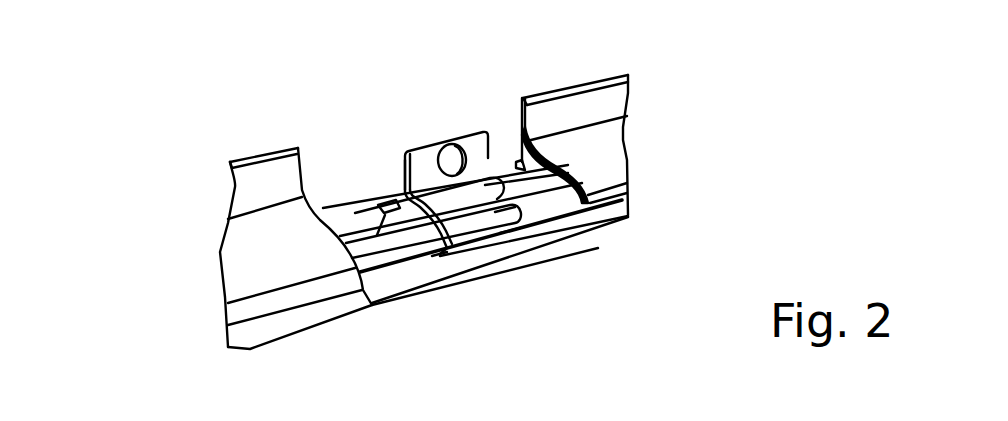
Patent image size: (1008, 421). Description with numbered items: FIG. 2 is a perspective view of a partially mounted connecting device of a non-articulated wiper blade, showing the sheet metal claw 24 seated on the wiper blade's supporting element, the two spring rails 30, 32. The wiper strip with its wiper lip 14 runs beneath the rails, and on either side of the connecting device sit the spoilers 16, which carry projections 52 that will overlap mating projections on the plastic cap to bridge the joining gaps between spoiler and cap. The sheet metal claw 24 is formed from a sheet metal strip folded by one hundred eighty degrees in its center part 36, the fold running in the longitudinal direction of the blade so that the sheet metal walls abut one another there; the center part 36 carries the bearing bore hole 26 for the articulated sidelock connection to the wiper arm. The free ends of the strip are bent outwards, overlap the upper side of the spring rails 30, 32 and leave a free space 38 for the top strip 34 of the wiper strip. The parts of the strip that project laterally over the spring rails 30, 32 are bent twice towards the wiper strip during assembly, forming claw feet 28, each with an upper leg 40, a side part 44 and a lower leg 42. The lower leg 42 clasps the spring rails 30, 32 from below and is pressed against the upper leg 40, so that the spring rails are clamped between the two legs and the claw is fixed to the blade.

The wiper lip 14 is at (617, 212).
The spoiler 16 is at (617, 108).
The spring rail 32 is at (337, 230).
The spring rail 30 is at (408, 243).
The top strip 34 is at (383, 226).
The lower leg 42 is at (442, 250).
The claw foot 28 is at (502, 245).
The side part 44 is at (510, 228).
The upper leg 40 is at (502, 208).
The sheet metal claw 24 is at (465, 118).
The bearing bore hole 26 is at (440, 157).
The center part 36 is at (423, 162).
The free space 38 is at (362, 204).
The projection 52 is at (515, 125).